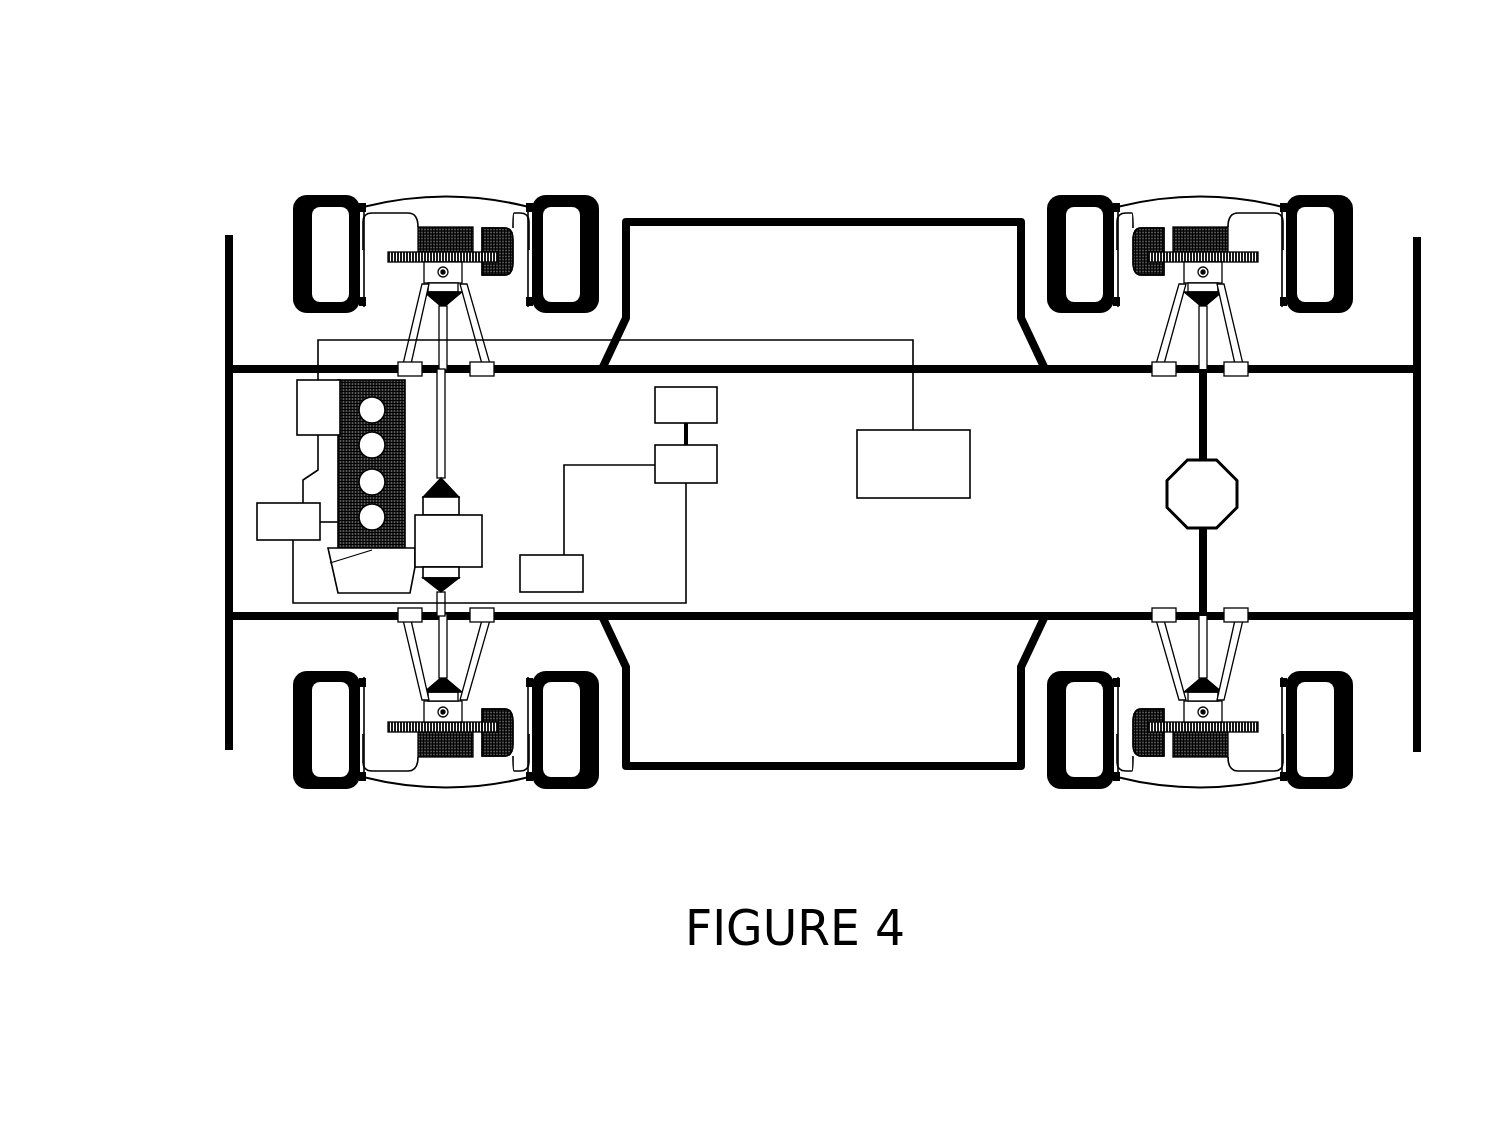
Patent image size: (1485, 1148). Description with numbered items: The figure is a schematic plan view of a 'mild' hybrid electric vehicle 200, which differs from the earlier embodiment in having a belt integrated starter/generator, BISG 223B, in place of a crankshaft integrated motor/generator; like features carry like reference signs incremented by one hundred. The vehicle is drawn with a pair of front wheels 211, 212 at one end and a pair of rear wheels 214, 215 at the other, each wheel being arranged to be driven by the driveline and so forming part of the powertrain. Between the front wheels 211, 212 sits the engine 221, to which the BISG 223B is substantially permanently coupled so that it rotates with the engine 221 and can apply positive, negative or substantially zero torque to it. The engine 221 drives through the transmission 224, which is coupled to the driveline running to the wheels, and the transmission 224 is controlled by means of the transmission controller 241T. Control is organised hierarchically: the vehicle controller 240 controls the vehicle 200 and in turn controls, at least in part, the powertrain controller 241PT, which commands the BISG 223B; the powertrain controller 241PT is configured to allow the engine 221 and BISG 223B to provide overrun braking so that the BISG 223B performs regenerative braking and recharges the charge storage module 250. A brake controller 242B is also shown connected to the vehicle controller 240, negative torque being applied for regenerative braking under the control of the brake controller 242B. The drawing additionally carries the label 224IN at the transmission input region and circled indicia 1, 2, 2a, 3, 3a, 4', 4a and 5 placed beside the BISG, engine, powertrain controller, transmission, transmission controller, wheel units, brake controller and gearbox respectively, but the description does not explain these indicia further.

The mild hybrid electric vehicle 200 is at (1398, 143).
The front wheel 211 is at (315, 790).
The front wheel 212 is at (585, 197).
The rear wheel 214 is at (1063, 790).
The rear wheel 215 is at (1065, 197).
The engine 221 is at (325, 399).
The belt integrated starter/generator (BISG) 223B is at (227, 423).
The transmission 224 is at (336, 611).
The gearbox input 224IN is at (372, 550).
The vehicle controller 240 is at (686, 453).
The powertrain controller 241PT is at (210, 537).
The transmission controller 241T is at (597, 542).
The brake controller 242B is at (737, 416).
The charge storage module 250 is at (913, 464).
The battery component 1 is at (310, 432).
The engine component 2 is at (400, 425).
The PCM component 2a is at (273, 540).
The transmission component 3 is at (482, 535).
The TCM component 3a is at (583, 572).
The wheel brake/drive unit component 4' is at (823, 494).
The ABS component 4a is at (717, 397).
The gearbox component 5 is at (330, 562).